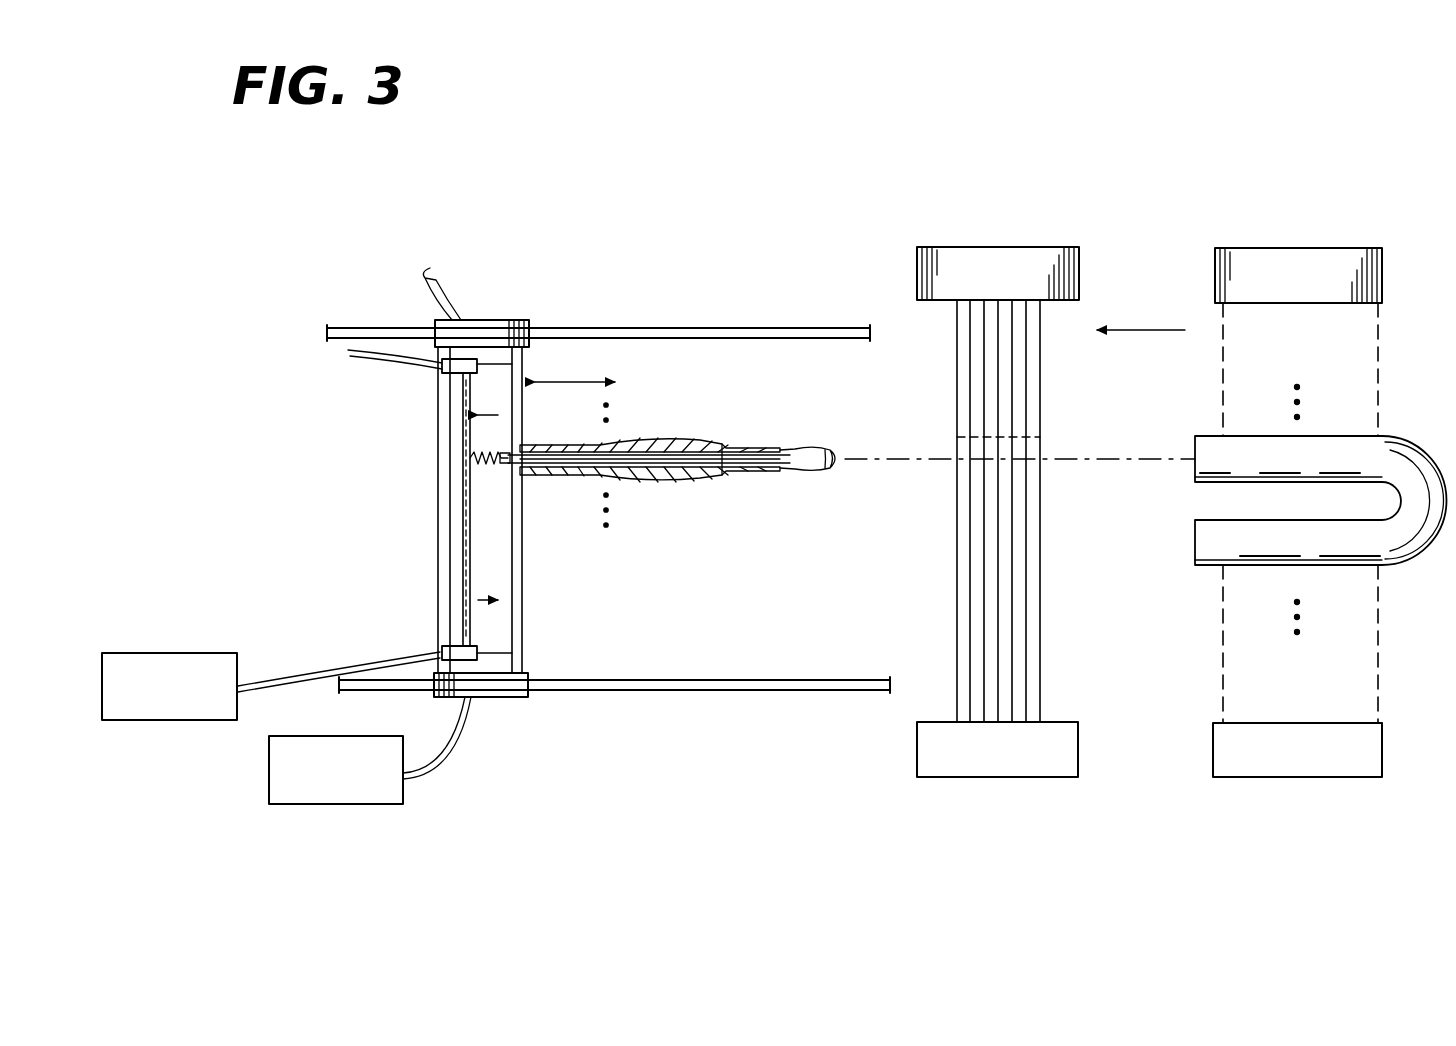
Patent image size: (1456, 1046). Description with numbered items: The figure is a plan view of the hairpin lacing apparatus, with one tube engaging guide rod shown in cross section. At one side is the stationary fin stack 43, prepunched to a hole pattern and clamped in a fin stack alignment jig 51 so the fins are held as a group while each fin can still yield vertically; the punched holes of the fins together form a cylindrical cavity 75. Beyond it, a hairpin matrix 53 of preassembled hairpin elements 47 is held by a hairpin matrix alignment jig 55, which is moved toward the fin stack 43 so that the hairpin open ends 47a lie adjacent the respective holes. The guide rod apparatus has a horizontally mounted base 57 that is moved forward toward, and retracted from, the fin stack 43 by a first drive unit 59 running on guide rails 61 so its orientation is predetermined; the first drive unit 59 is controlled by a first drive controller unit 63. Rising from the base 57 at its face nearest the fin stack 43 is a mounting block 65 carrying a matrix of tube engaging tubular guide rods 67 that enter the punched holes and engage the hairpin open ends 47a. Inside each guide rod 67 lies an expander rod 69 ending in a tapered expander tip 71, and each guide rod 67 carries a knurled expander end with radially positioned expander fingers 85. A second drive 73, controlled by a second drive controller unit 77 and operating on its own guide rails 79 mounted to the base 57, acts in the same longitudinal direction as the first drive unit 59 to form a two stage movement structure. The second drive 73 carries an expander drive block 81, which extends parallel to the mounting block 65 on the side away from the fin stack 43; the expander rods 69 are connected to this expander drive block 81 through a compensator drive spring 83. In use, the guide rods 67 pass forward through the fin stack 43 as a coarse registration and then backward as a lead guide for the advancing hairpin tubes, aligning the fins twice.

The fin stack 43 is at (1040, 650).
The hairpin element 47 is at (1146, 500).
The hairpin open ends 47a is at (1192, 537).
The fin stack alignment jig 51 is at (1018, 255).
The hairpin matrix 53 is at (1378, 365).
The hairpin matrix alignment jig 55 is at (1318, 255).
The base 57 is at (510, 575).
The first drive unit 59 is at (503, 328).
The guide rails 61 is at (680, 330).
The first drive controller unit 63 is at (343, 805).
The mounting block 65 is at (525, 373).
The tube engaging tubular guide rod 67 is at (625, 432).
The expander rod 69 is at (680, 463).
The tapered expander tip 71 is at (825, 470).
The second drive 73 is at (462, 362).
The cylindrical cavity 75 is at (1047, 438).
The second drive controller unit 77 is at (190, 722).
The guide rails 79 is at (486, 366).
The expander drive block 81 is at (455, 550).
The compensator drive spring 83 is at (476, 462).
The expander fingers 85 is at (768, 480).